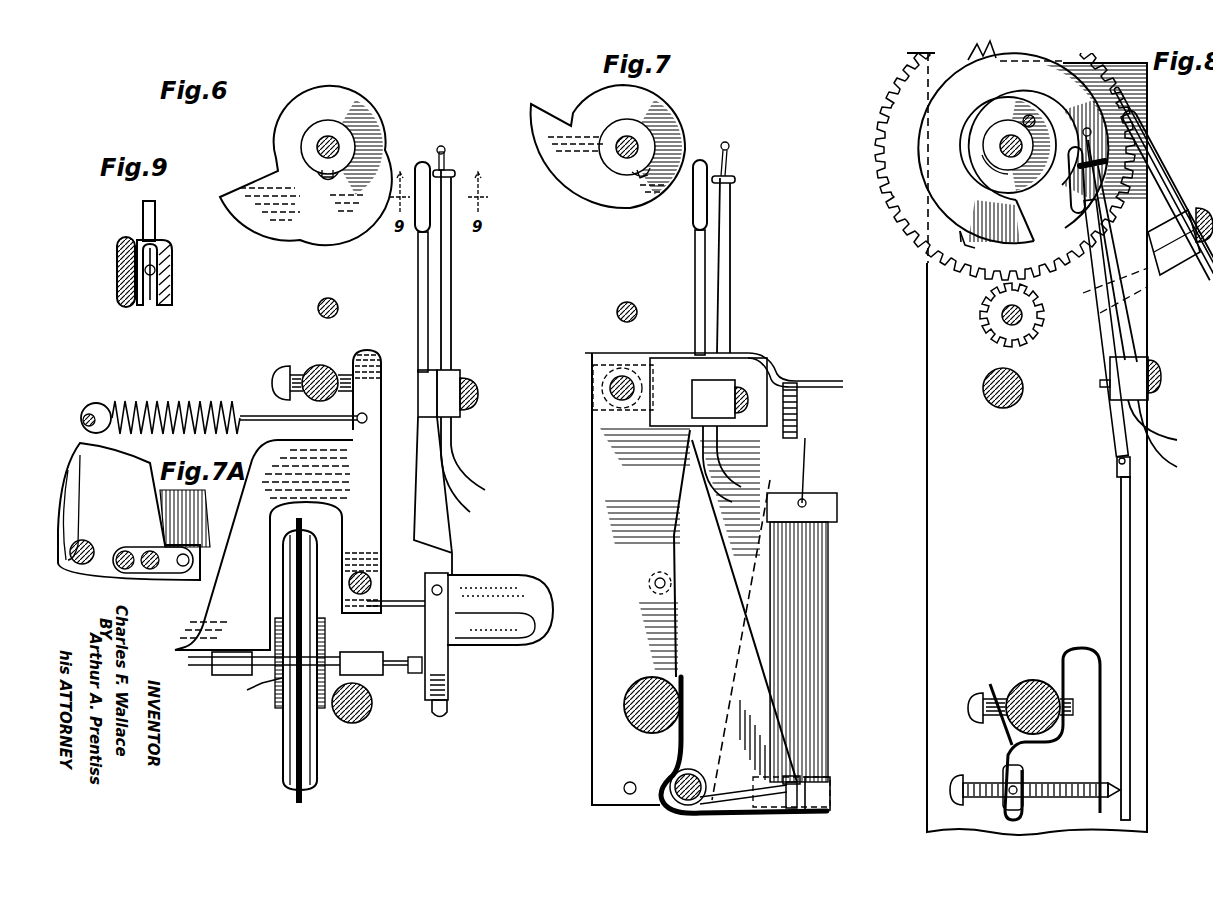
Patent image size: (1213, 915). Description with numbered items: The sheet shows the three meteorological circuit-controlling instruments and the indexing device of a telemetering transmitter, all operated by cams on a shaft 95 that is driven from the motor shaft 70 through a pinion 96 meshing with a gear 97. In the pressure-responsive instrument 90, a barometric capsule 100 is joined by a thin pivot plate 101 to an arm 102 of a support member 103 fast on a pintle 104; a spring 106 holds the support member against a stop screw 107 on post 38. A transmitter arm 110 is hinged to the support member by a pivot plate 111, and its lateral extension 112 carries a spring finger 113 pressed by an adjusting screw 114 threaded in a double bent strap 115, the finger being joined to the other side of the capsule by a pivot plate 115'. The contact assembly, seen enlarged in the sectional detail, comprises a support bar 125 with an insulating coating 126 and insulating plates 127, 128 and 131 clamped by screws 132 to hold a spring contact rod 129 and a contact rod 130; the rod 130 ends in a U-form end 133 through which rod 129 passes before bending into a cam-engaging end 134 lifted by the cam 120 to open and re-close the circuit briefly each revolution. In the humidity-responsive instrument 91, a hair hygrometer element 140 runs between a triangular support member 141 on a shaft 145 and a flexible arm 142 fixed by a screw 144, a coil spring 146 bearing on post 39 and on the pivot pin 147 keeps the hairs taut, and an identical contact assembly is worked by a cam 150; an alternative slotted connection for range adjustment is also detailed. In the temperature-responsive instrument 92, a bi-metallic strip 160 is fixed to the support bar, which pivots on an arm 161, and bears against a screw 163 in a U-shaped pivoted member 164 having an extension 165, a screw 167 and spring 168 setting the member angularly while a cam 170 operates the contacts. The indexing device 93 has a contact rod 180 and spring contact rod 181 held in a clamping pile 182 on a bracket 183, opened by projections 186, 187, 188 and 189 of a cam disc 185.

In FIG. 6, the post 38 is at (322, 365).
In FIG. 7, the post 38 is at (608, 393).
In FIG. 8, the post 38 is at (994, 407).
In FIG. 6, the post 39 is at (360, 720).
In FIG. 7, the post 39 is at (648, 680).
In FIG. 8, the post 39 is at (1040, 680).
In FIG. 6, the shaft 70 is at (320, 306).
In FIG. 7, the shaft 70 is at (617, 312).
In FIG. 8, the shaft 70 is at (1000, 323).
In FIG. 6, the pressure-responsive instrument 90 is at (404, 251).
In FIG. 7, the humidity-responsive instrument 91 is at (745, 244).
In FIG. 8, the temperature-responsive instrument 92 is at (1093, 360).
In FIG. 8, the indexing circuit-controlling device 93 is at (912, 191).
In FIG. 6, the shaft 95 is at (320, 145).
In FIG. 7, the shaft 95 is at (640, 141).
In FIG. 8, the shaft 95 is at (990, 147).
In FIG. 8, the pinion 96 is at (985, 308).
In FIG. 8, the gear 97 is at (920, 243).
In FIG. 6, the pressure element (barometric capsule) 100 is at (318, 768).
In FIG. 6, the pivot plate 101 is at (216, 672).
In FIG. 6, the arm 102 is at (238, 575).
In FIG. 6, the support member 103 is at (367, 463).
In FIG. 6, the pintle 104 is at (372, 574).
In FIG. 6, the spring 106 is at (152, 400).
In FIG. 6, the screw 107 is at (285, 366).
In FIG. 6, the transmitter arm 110 is at (440, 534).
In FIG. 6, the pivot plate 111 is at (391, 608).
In FIG. 6, the lateral extension 112 is at (500, 593).
In FIG. 6, the spring finger 113 is at (505, 660).
In FIG. 6, the adjusting screw 114 is at (440, 722).
In FIG. 6, the double bent strap 115 is at (458, 636).
In FIG. 6, the pivot plate 115' is at (402, 680).
In FIG. 6, the cam 120 is at (252, 188).
In FIG. 9, the support bar 125 is at (118, 283).
In FIG. 6, the support bar 125 is at (418, 281).
In FIG. 7, the support bar 125 is at (695, 278).
In FIG. 8, the support bar 125 is at (1117, 428).
In FIG. 9, the insulating coating 126 is at (117, 255).
In FIG. 6, the insulating coating 126 is at (421, 164).
In FIG. 7, the insulating coating 126 is at (693, 213).
In FIG. 8, the insulating coating 126 is at (1085, 238).
In FIG. 6, the insulating plate 127 is at (420, 372).
In FIG. 6, the insulating plate 128 is at (456, 371).
In FIG. 9, the spring contact rod 129 is at (150, 302).
In FIG. 6, the spring contact rod 129 is at (444, 337).
In FIG. 7, the spring contact rod 129 is at (718, 303).
In FIG. 8, the spring contact rod 129 is at (1113, 287).
In FIG. 9, the contact rod 130 is at (162, 293).
In FIG. 6, the contact rod 130 is at (454, 345).
In FIG. 7, the contact rod 130 is at (732, 275).
In FIG. 8, the contact rod 130 is at (1130, 313).
In FIG. 6, the insulating plate 131 is at (462, 418).
In FIG. 6, the screws 132 is at (480, 393).
In FIG. 9, the U-form end 133 is at (165, 245).
In FIG. 6, the U-form end 133 is at (456, 172).
In FIG. 7, the U-form end 133 is at (736, 178).
In FIG. 9, the cam-engaging end 134 is at (160, 210).
In FIG. 6, the cam-engaging end 134 is at (444, 148).
In FIG. 7, the cam-engaging end 134 is at (731, 149).
In FIG. 7A, the humidity-sensitive element 140 is at (212, 506).
In FIG. 7, the humidity-sensitive element 140 is at (839, 554).
In FIG. 7A, the support member 141 is at (82, 455).
In FIG. 7, the support member 141 is at (727, 622).
In FIG. 7, the arm 142 is at (756, 355).
In FIG. 7, the screw 144 is at (800, 376).
In FIG. 7, the shaft 145 is at (700, 779).
In FIG. 7, the coil spring 146 is at (668, 755).
In FIG. 7, the pivot pin 147 is at (800, 785).
In FIG. 7, the cam 150 is at (650, 103).
In FIG. 8, the bi-metallic strip 160 is at (1121, 568).
In FIG. 8, the arm 161 is at (1118, 470).
In FIG. 8, the screw 163 is at (1080, 775).
In FIG. 8, the pivoted member 164 is at (1075, 734).
In FIG. 8, the lateral extension 165 is at (1003, 780).
In FIG. 8, the screw 167 is at (970, 700).
In FIG. 8, the spring 168 is at (997, 683).
In FIG. 8, the cam 170 is at (1027, 212).
In FIG. 8, the contact rod 180 is at (1152, 172).
In FIG. 8, the spring contact rod 181 is at (1140, 131).
In FIG. 8, the clamping pile 182 is at (1183, 278).
In FIG. 8, the bracket 183 is at (1165, 295).
In FIG. 8, the cam disc 185 is at (922, 160).
In FIG. 8, the peripheral projection 186 is at (1047, 60).
In FIG. 8, the peripheral projection 187 is at (963, 244).
In FIG. 8, the peripheral projection 188 is at (990, 72).
In FIG. 8, the peripheral projection 189 is at (992, 60).